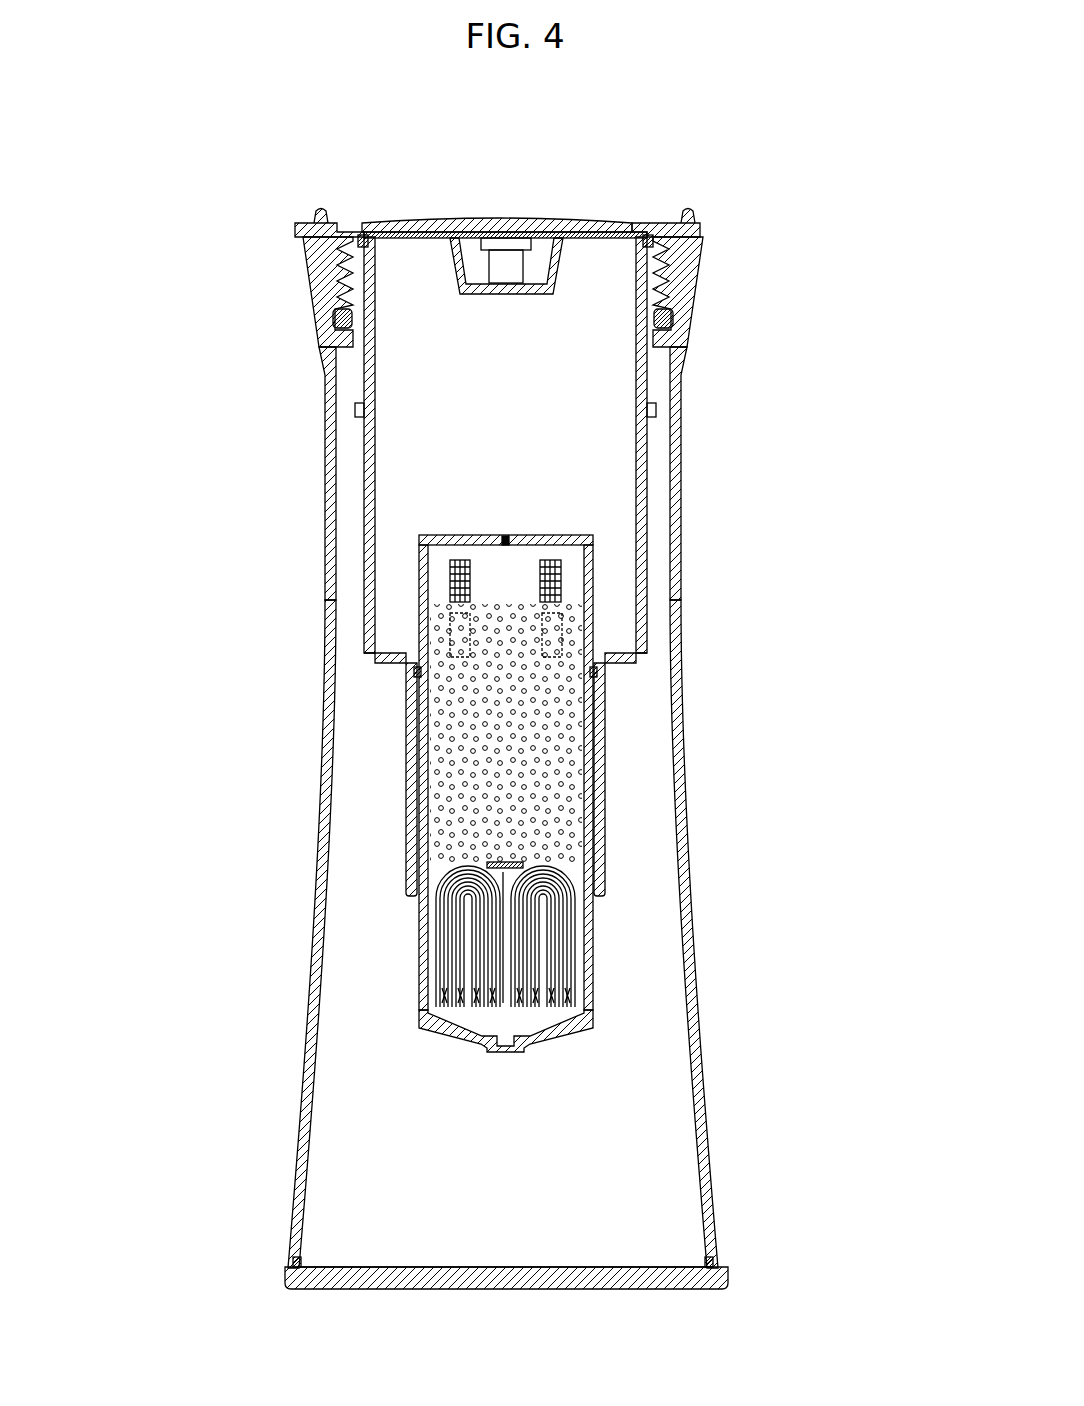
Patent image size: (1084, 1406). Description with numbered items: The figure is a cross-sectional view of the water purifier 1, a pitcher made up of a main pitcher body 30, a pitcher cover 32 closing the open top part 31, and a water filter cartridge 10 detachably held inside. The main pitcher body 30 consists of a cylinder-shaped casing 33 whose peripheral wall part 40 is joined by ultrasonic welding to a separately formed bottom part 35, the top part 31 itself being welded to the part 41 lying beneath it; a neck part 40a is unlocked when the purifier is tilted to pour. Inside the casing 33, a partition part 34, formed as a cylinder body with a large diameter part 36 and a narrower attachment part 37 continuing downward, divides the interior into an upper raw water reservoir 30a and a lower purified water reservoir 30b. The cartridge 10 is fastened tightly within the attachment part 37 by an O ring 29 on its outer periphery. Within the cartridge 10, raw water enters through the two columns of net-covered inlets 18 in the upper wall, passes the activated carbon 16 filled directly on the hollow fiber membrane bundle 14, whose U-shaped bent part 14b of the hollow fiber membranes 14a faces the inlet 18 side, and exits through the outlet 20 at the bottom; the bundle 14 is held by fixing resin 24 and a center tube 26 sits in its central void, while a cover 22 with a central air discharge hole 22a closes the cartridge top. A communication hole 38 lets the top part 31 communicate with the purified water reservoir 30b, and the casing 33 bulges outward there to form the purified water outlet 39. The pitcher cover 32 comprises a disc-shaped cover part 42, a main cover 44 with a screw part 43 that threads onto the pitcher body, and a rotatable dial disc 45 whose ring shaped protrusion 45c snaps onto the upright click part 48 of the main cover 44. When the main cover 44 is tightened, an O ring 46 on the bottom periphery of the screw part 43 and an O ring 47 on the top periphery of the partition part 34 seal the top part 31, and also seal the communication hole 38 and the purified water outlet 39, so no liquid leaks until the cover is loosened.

The water purifier 1 is at (448, 156).
The water filter cartridge 10 is at (608, 612).
The hollow fiber membrane bundle 14 is at (578, 906).
The hollow fiber membrane 14a is at (578, 963).
The bent part 14b is at (468, 866).
The activated carbon 16 is at (570, 803).
The inlet 18 is at (466, 585).
The outlet 20 is at (504, 1055).
The cover 22 is at (458, 540).
The air discharge hole 22a is at (506, 536).
The fixing resin 24 is at (578, 990).
The center tube 26 is at (503, 932).
The O ring 29 is at (413, 676).
The main pitcher body 30 is at (798, 630).
The raw water reservoir 30a is at (628, 512).
The purified water reservoir 30b is at (665, 1162).
The top part 31 is at (327, 293).
The pitcher cover 32 is at (593, 138).
The casing 33 is at (684, 786).
The partition part 34 is at (750, 632).
The bottom part 35 is at (290, 1268).
The large diameter part 36 is at (640, 632).
The attachment part 37 is at (600, 744).
The communication hole 38 is at (370, 355).
The purified water outlet 39 is at (318, 214).
The peripheral wall part 40 is at (128, 295).
The neck part 40a is at (336, 682).
The part other than the top part 41 is at (328, 487).
The cover part 42 is at (340, 222).
The screw part 43 is at (348, 278).
The main cover 44 is at (660, 230).
The dial disc 45 is at (590, 222).
The ring shaped protrusion 45c is at (548, 232).
The O ring 46 is at (336, 318).
The O ring 47 is at (368, 232).
The click part 48 is at (509, 245).